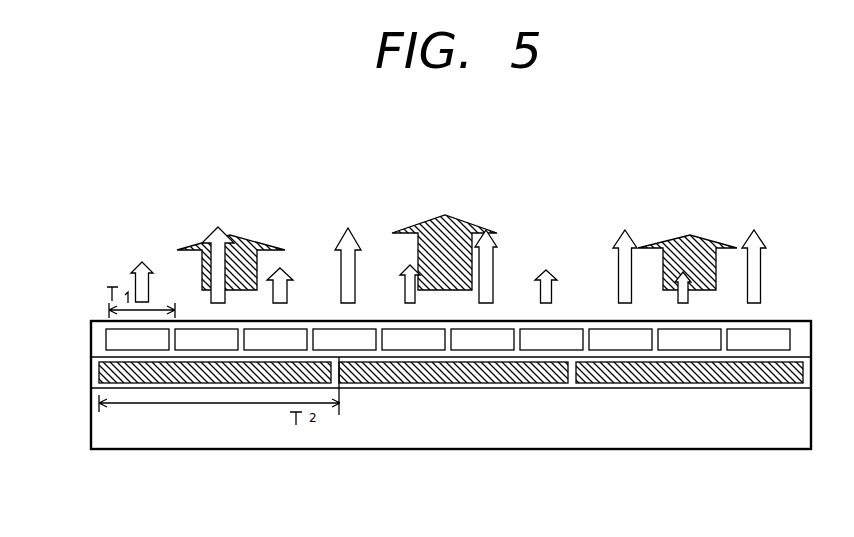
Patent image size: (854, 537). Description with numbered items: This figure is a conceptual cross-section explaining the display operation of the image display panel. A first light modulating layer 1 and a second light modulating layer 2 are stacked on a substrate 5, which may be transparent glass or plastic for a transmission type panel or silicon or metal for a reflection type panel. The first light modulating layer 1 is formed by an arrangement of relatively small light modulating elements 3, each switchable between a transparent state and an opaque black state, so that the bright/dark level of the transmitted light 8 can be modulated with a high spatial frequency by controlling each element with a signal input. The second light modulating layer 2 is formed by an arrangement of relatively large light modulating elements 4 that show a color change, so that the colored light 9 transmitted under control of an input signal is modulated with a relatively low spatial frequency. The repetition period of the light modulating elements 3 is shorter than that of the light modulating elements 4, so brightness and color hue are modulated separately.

The first light modulating layer 1 is at (100, 335).
The second light modulating layer 2 is at (93, 370).
The light modulating element 3 is at (273, 342).
The light modulating element 4 is at (206, 383).
The substrate 5 is at (302, 426).
The transmitted light 8 is at (615, 235).
The colored light 9 is at (672, 243).